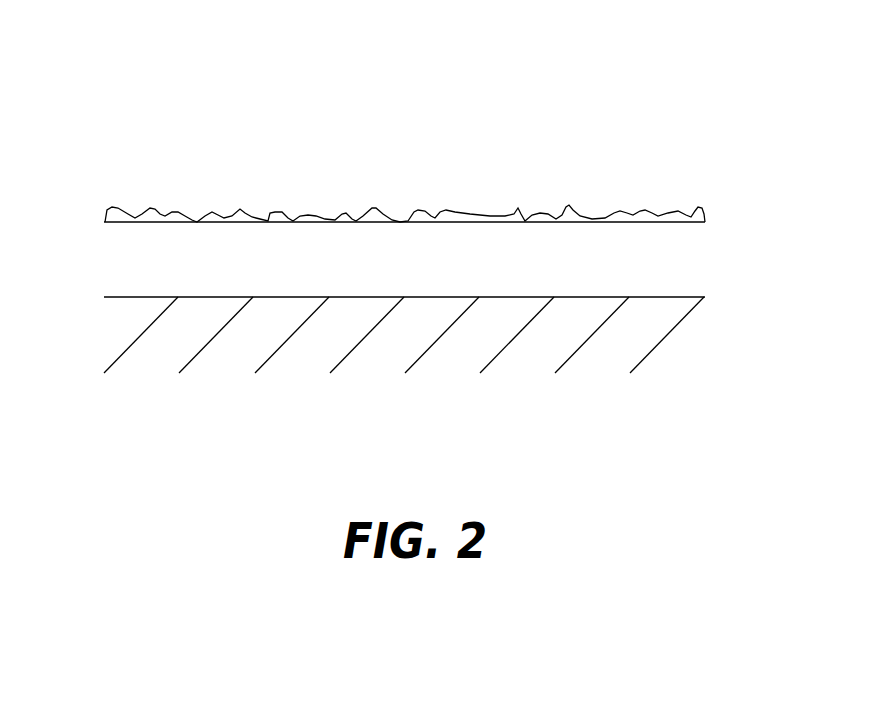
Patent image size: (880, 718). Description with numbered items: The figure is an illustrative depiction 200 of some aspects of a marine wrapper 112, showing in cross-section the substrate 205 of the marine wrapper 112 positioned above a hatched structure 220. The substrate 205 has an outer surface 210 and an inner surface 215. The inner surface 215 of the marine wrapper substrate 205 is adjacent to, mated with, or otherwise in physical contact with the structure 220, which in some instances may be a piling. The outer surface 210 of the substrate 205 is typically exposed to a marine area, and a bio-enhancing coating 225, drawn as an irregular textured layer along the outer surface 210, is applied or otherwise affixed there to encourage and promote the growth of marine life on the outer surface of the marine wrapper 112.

The illustrative depiction 200 is at (53, 54).
The marine wrapper 112 is at (167, 156).
The bio-enhancing coating 225 is at (448, 210).
The outer surface 210 is at (690, 223).
The substrate 205 is at (492, 264).
The inner surface 215 is at (118, 298).
The structure 220 is at (65, 363).